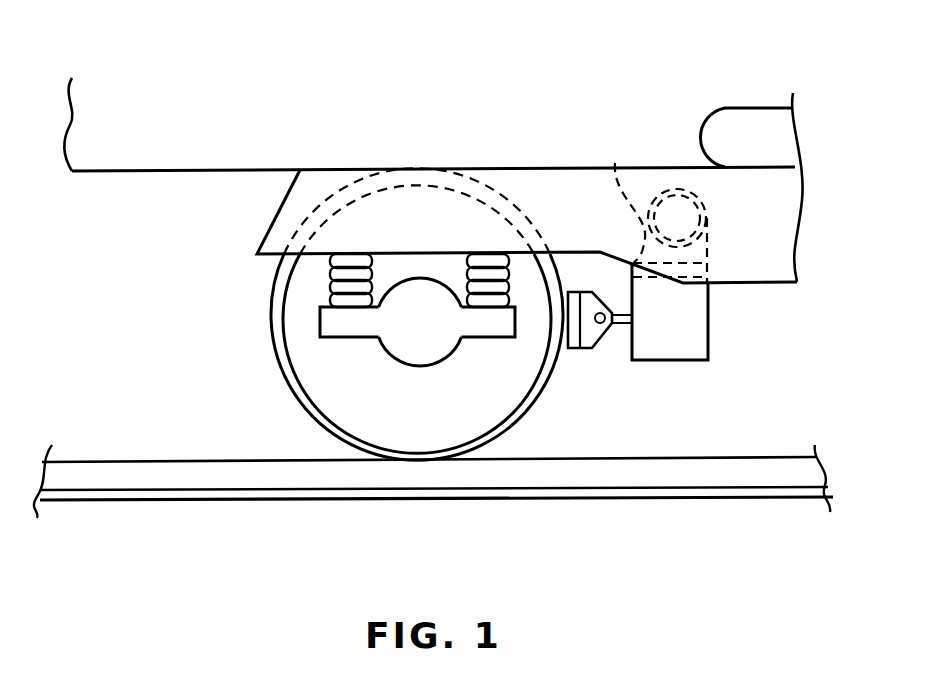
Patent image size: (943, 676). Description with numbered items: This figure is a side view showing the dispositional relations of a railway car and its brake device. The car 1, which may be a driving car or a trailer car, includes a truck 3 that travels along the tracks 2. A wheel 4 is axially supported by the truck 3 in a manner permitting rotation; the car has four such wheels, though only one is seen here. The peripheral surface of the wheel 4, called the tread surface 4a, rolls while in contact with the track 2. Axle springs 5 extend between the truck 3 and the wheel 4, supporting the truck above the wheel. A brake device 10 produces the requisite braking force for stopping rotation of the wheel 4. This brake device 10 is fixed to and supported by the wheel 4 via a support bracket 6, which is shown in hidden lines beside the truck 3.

The car 1 is at (424, 104).
The tracks 2 is at (153, 480).
The truck 3 is at (763, 268).
The wheel 4 is at (305, 378).
The tread surface 4a is at (533, 399).
The axle spring 5 is at (330, 286).
The support bracket 6 is at (615, 165).
The brake device 10 is at (688, 348).